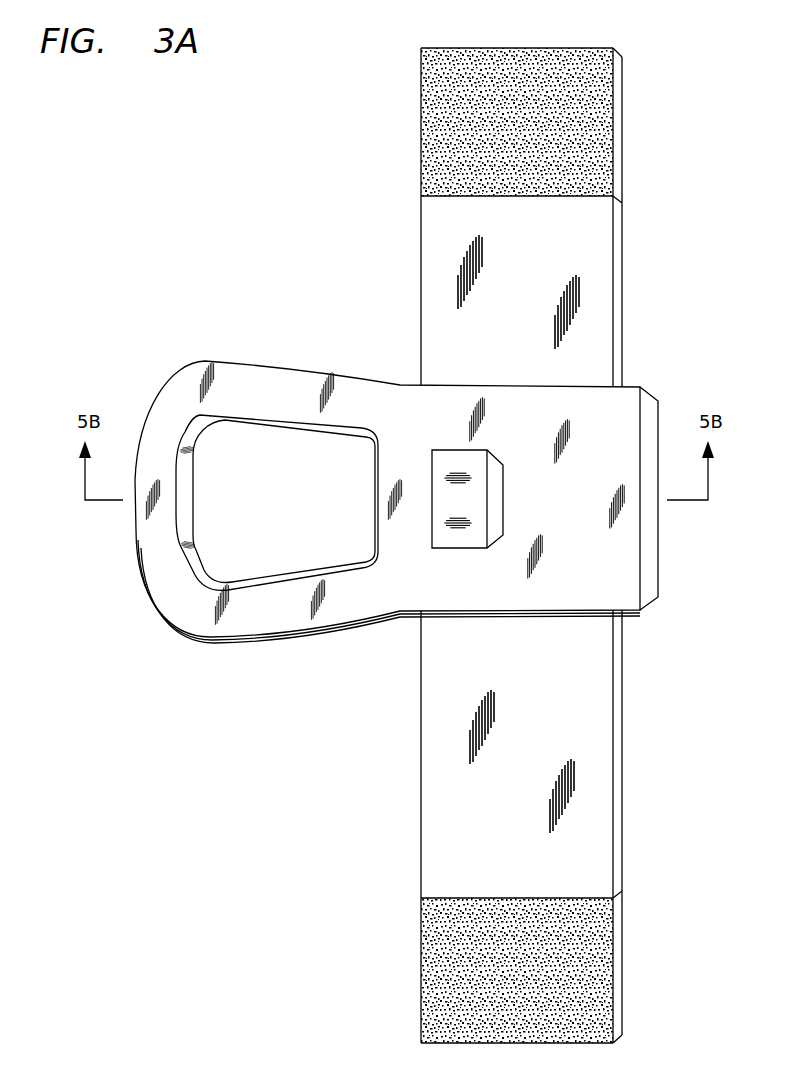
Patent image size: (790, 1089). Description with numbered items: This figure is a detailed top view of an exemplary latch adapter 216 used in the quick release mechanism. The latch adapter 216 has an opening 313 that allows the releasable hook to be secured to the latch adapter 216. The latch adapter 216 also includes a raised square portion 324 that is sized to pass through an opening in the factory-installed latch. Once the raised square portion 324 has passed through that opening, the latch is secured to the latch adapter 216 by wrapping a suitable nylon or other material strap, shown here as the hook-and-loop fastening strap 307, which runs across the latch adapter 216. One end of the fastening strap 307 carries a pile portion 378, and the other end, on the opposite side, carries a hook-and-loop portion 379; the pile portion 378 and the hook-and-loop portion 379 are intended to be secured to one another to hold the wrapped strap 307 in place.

The latch adapter 216 is at (275, 639).
The hook-and-loop fastening strap 307 is at (440, 788).
The opening 313 is at (286, 508).
The raised square portion 324 is at (473, 540).
The pile portion 378 is at (437, 952).
The hook-and-loop portion 379 is at (440, 108).